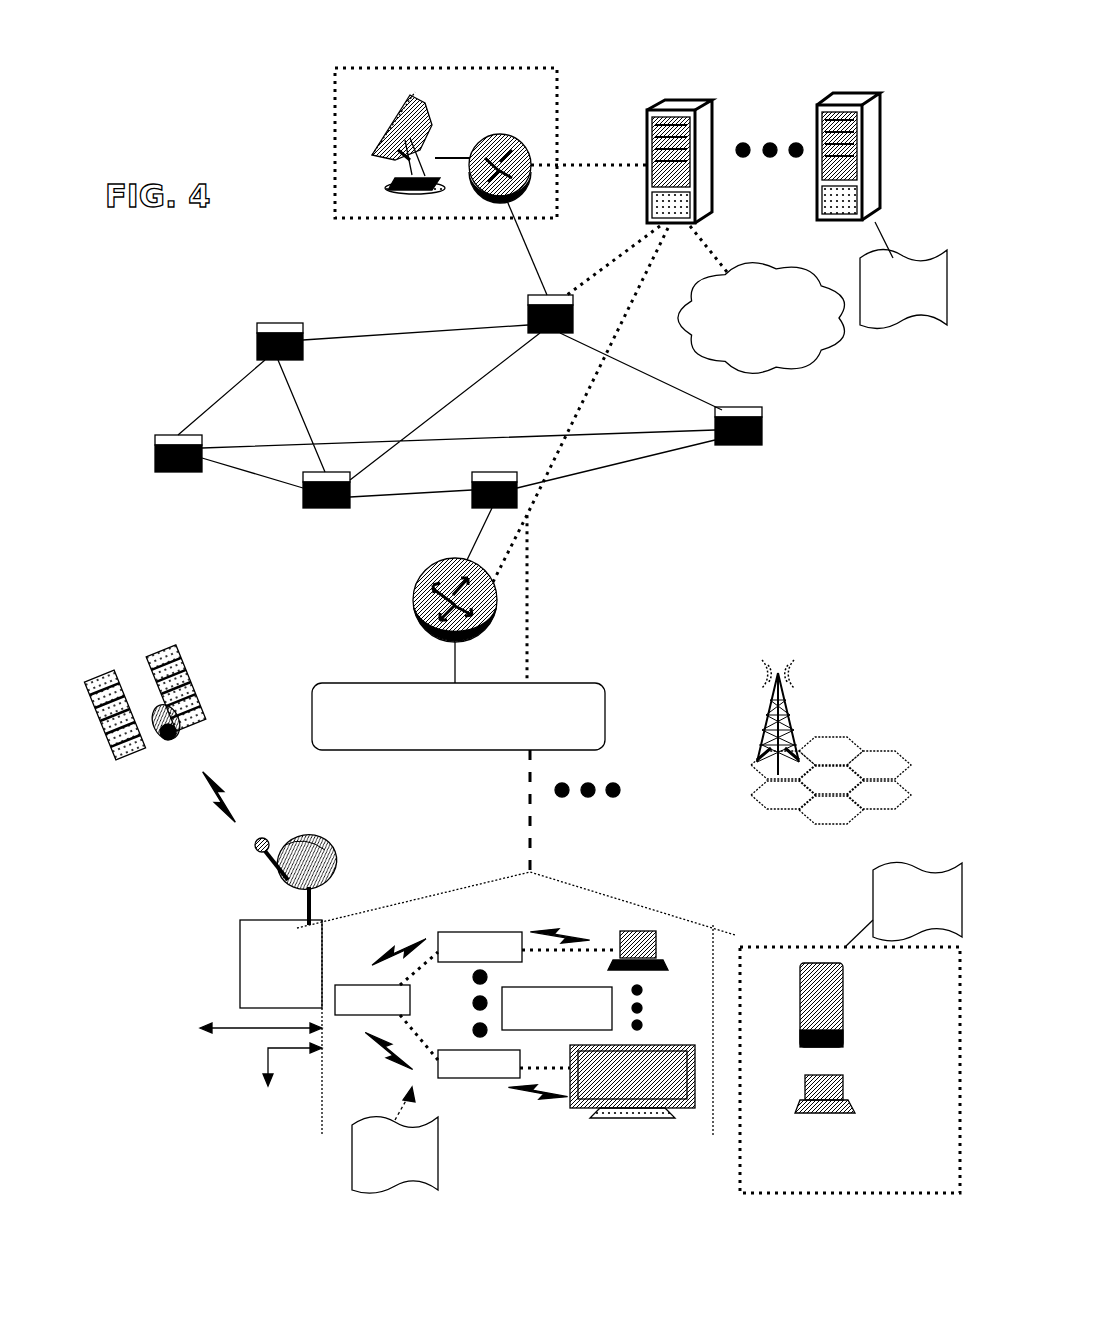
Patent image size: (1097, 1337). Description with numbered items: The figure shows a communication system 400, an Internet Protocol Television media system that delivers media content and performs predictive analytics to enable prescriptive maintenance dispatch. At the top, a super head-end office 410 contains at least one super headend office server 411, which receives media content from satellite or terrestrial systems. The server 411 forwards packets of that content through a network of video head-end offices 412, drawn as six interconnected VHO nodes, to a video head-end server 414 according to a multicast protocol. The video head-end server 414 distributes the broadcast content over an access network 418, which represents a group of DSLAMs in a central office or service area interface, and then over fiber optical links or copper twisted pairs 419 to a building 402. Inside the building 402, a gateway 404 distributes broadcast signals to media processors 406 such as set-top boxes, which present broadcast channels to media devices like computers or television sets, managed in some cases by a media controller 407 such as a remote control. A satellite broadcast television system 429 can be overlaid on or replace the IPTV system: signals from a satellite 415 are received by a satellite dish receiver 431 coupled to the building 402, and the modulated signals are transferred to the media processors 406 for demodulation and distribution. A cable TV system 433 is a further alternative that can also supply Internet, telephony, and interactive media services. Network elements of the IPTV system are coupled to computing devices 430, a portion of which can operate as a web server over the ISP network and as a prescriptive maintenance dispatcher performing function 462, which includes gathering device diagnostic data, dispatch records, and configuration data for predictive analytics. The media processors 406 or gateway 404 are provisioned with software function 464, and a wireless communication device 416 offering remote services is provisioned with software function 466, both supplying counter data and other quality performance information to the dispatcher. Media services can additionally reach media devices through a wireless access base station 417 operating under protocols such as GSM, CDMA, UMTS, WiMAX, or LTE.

The communication system 400 is at (502, 616).
The building 402 is at (516, 1032).
The gateway 404 is at (372, 1000).
The media processor 406 is at (480, 1005).
The media controller 407 is at (557, 1008).
The super head-end office 410 is at (417, 150).
The super headend office server 411 is at (470, 142).
The network of video head-end offices 412 is at (157, 455).
The video head-end server 414 is at (413, 605).
The satellite 415 is at (97, 712).
The wireless communication device 416 is at (855, 977).
The wireless access base station 417 is at (830, 740).
The access network 418 is at (606, 713).
The fiber optical links or copper twisted pairs 419 is at (528, 843).
The satellite broadcast television system 429 is at (232, 752).
The computing devices 430 is at (855, 92).
The satellite dish receiver 431 is at (223, 917).
The cable TV system 433 is at (267, 1100).
The function 462 is at (903, 275).
The software function 464 is at (395, 1140).
The software function 466 is at (903, 904).